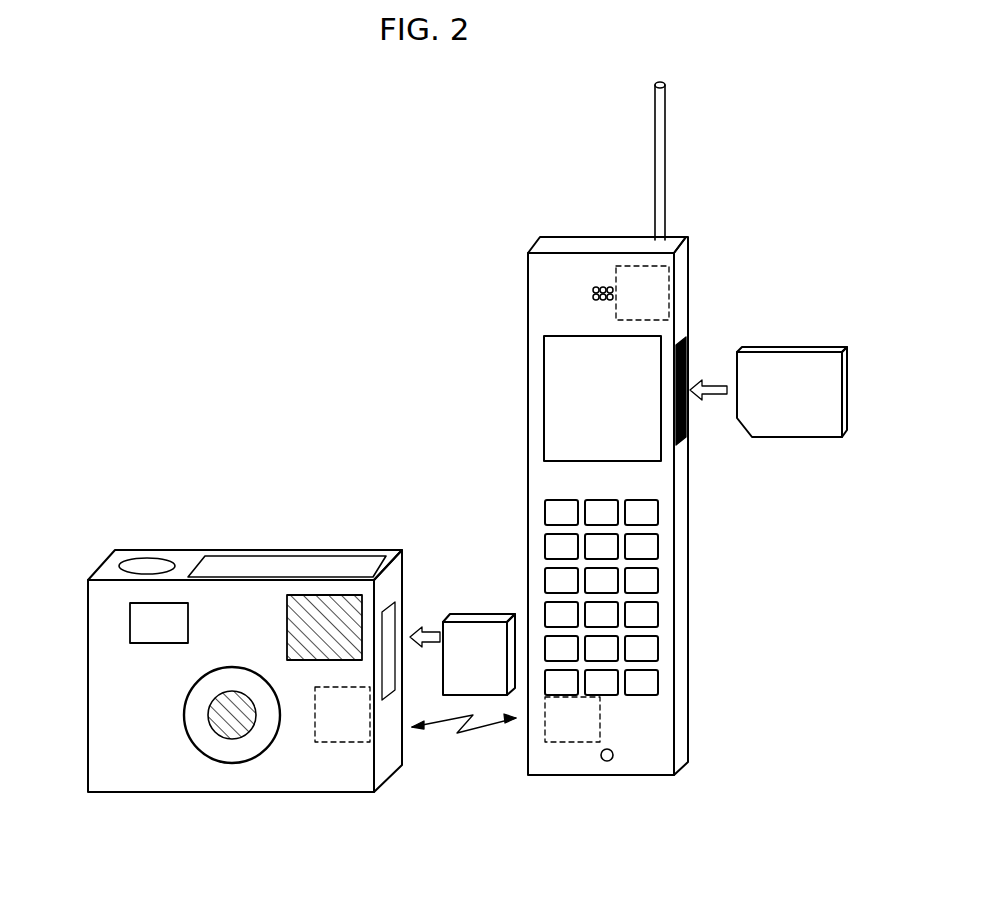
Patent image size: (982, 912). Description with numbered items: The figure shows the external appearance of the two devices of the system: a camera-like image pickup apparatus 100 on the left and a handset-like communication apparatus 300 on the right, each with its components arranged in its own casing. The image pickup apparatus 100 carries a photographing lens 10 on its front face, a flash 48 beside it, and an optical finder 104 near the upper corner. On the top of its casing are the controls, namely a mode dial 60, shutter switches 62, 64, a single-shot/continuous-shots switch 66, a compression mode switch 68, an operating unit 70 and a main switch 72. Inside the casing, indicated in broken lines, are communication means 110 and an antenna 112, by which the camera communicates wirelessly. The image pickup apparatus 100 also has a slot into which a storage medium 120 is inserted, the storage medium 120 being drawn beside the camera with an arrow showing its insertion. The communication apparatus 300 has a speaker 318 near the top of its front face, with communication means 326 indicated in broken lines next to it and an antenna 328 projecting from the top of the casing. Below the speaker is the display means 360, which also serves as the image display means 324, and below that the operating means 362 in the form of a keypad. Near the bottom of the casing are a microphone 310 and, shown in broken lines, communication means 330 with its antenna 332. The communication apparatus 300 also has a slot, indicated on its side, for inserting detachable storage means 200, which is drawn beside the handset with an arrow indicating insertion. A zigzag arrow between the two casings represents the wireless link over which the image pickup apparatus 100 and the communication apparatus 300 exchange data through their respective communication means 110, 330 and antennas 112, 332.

The photographing lens 10 is at (220, 735).
The flash 48 is at (305, 655).
The mode dial 60 is at (287, 529).
The shutter switch 62 is at (158, 540).
The shutter switch 64 is at (150, 562).
The single-shot/continuous-shots switch 66 is at (287, 529).
The compression mode switch 68 is at (287, 529).
The operating unit 70 is at (287, 529).
The main switch 72 is at (288, 562).
The image pickup apparatus 100 is at (152, 782).
The optical finder 104 is at (140, 625).
The communication means 110 is at (346, 779).
The antenna 112 is at (335, 742).
The storage medium 120 is at (470, 620).
The detachable storage means 200 is at (793, 348).
The communication apparatus 300 is at (528, 408).
The microphone 310 is at (605, 762).
The speaker 318 is at (597, 287).
The image display means 324 is at (557, 337).
The communication means 326 is at (670, 292).
The antenna 328 is at (665, 160).
The communication means 330 is at (542, 758).
The antenna 332 is at (565, 742).
The display means 360 is at (520, 373).
The operating means 362 is at (690, 502).